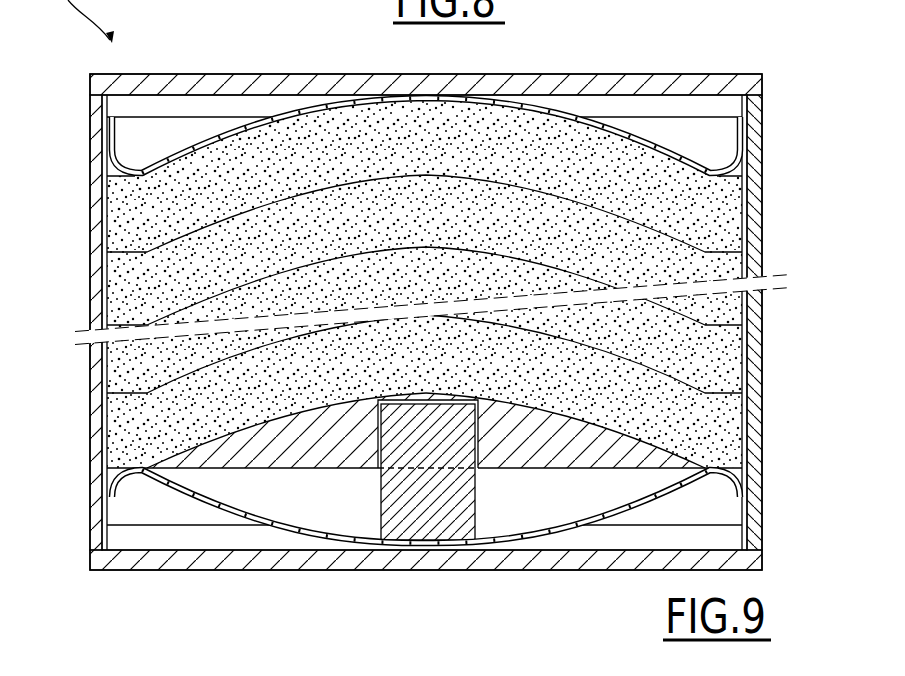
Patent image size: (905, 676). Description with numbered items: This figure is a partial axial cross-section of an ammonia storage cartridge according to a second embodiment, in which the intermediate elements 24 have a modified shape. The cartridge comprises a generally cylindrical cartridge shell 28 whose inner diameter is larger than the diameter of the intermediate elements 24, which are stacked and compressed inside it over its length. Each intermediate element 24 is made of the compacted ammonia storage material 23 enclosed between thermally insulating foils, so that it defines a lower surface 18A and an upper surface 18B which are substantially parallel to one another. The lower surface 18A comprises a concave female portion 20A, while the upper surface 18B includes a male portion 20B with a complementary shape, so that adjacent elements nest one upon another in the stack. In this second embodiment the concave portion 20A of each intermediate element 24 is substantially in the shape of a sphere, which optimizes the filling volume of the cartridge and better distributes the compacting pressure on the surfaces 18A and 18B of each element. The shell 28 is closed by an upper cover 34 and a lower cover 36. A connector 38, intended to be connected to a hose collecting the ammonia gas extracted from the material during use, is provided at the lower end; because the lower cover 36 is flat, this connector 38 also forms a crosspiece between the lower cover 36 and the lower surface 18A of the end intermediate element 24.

The lower surface 18A is at (322, 402).
The upper surface 18B is at (170, 360).
The female portion 20A is at (545, 403).
The male portion 20B is at (623, 348).
The material 23 is at (137, 435).
The intermediate element 24 is at (137, 202).
The cartridge shell 28 is at (98, 277).
The upper cover 34 is at (657, 135).
The lower cover 36 is at (200, 493).
The connector 38 is at (435, 508).